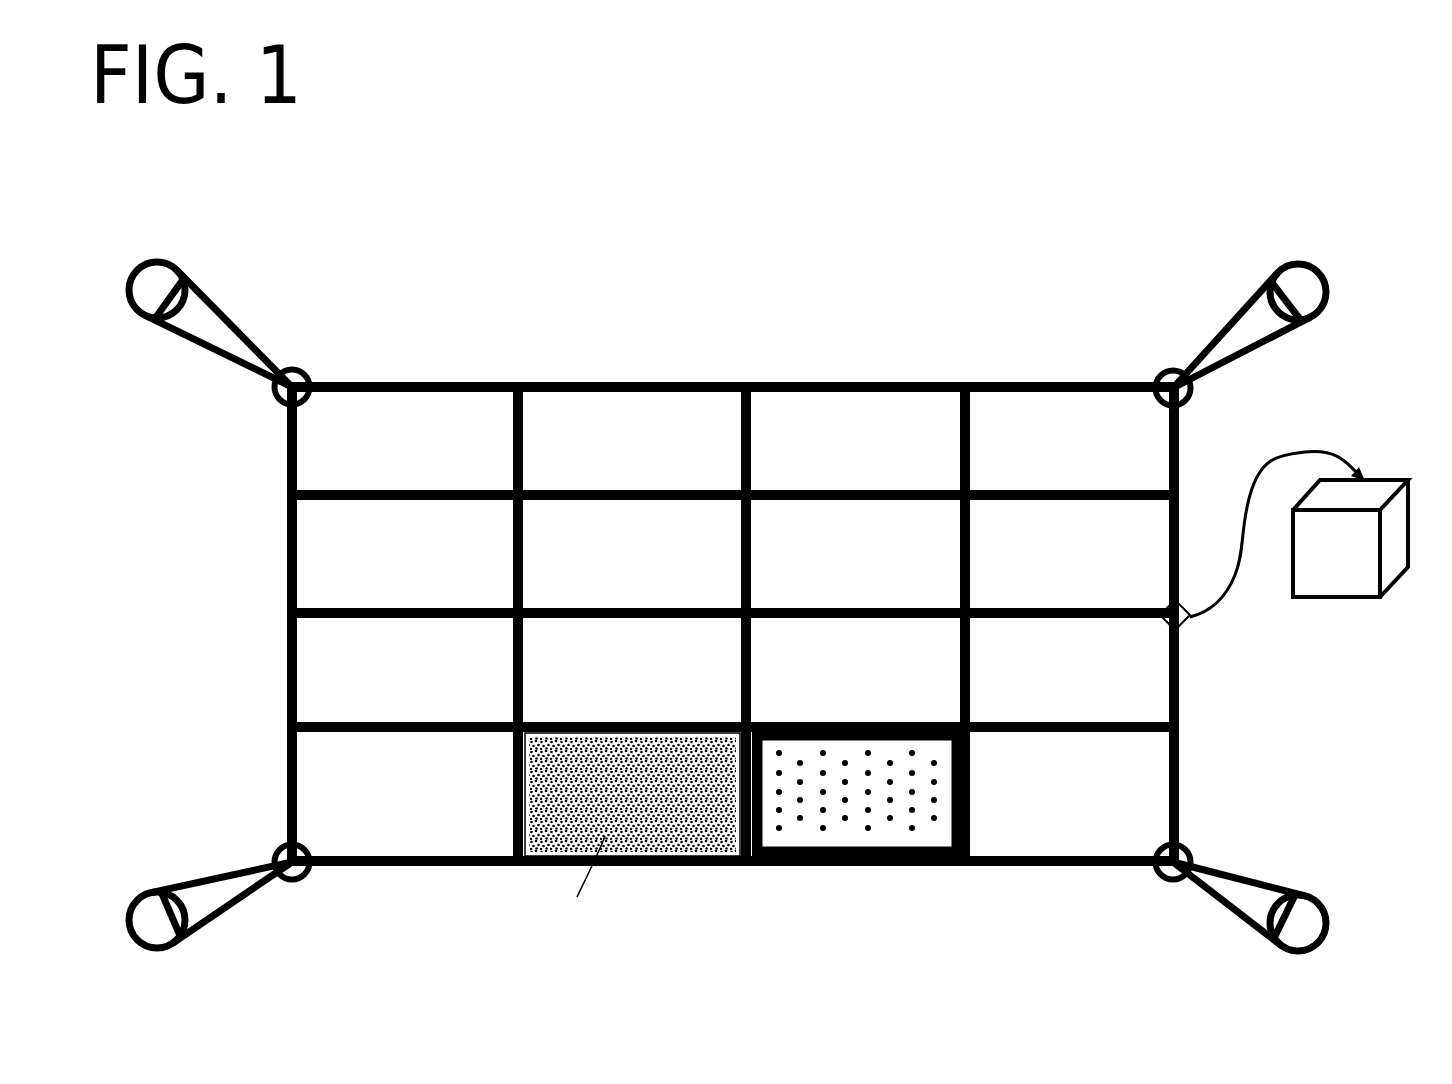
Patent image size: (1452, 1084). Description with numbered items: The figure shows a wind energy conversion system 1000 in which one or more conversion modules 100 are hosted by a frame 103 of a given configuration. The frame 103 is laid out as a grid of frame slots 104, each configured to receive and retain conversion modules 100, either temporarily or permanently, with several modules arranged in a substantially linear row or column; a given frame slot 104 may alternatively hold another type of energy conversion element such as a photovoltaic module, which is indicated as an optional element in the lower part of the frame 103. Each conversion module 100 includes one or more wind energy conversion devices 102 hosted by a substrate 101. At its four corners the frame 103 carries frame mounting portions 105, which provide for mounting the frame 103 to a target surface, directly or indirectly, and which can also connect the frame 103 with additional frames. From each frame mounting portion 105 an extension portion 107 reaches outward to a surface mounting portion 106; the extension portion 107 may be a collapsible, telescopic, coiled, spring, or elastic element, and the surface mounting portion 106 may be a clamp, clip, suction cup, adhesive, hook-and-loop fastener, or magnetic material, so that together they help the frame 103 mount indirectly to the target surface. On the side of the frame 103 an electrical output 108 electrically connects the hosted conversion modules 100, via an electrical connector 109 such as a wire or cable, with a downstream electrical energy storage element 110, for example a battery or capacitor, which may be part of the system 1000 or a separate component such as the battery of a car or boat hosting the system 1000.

The wind energy conversion system 1000 is at (1080, 146).
The conversion module 100 is at (938, 863).
The substrate 101 is at (835, 864).
The wind energy conversion device 102 is at (877, 838).
The frame 103 is at (666, 386).
The frame slot 104 is at (423, 453).
The frame mounting portion 105 is at (293, 370).
The surface mounting portion 106 is at (1273, 283).
The extension portion 107 is at (1221, 327).
The electrical output 108 is at (1180, 623).
The electrical connector 109 is at (1310, 450).
The electrical energy storage element 110 is at (1337, 598).